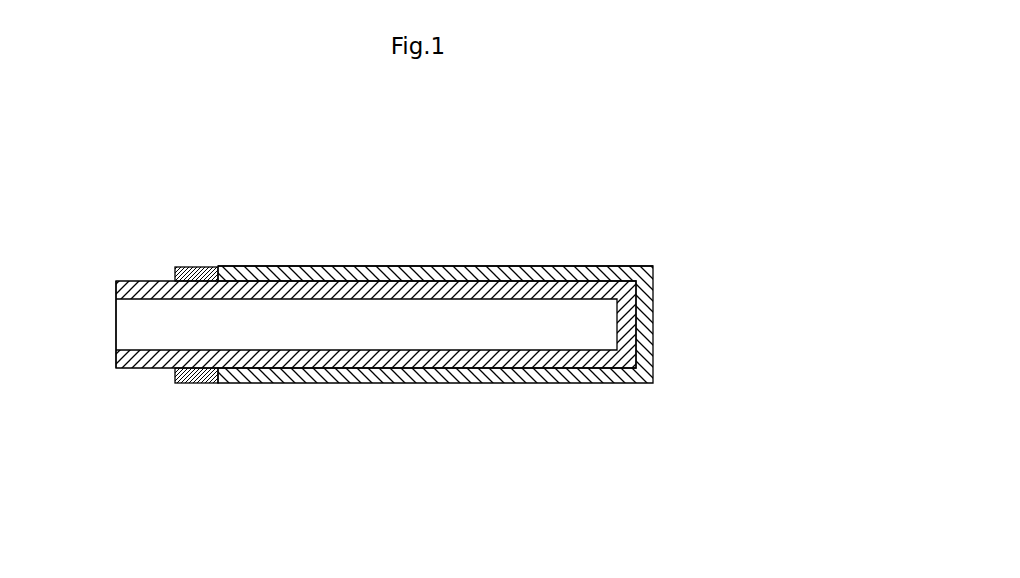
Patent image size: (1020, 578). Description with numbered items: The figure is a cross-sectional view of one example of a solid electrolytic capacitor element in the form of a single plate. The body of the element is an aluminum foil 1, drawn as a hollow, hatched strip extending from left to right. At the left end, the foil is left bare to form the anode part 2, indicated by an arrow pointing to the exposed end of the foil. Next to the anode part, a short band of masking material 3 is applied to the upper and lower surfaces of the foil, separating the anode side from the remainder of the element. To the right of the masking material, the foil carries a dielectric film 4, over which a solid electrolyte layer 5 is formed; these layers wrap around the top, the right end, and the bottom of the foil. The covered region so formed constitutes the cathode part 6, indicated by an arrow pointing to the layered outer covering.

The aluminum foil 1 is at (150, 345).
The anode part 2 is at (147, 265).
The masking material 3 is at (199, 267).
The dielectric film 4 is at (301, 275).
The solid electrolyte layer 5 is at (432, 273).
The cathode part 6 is at (542, 258).